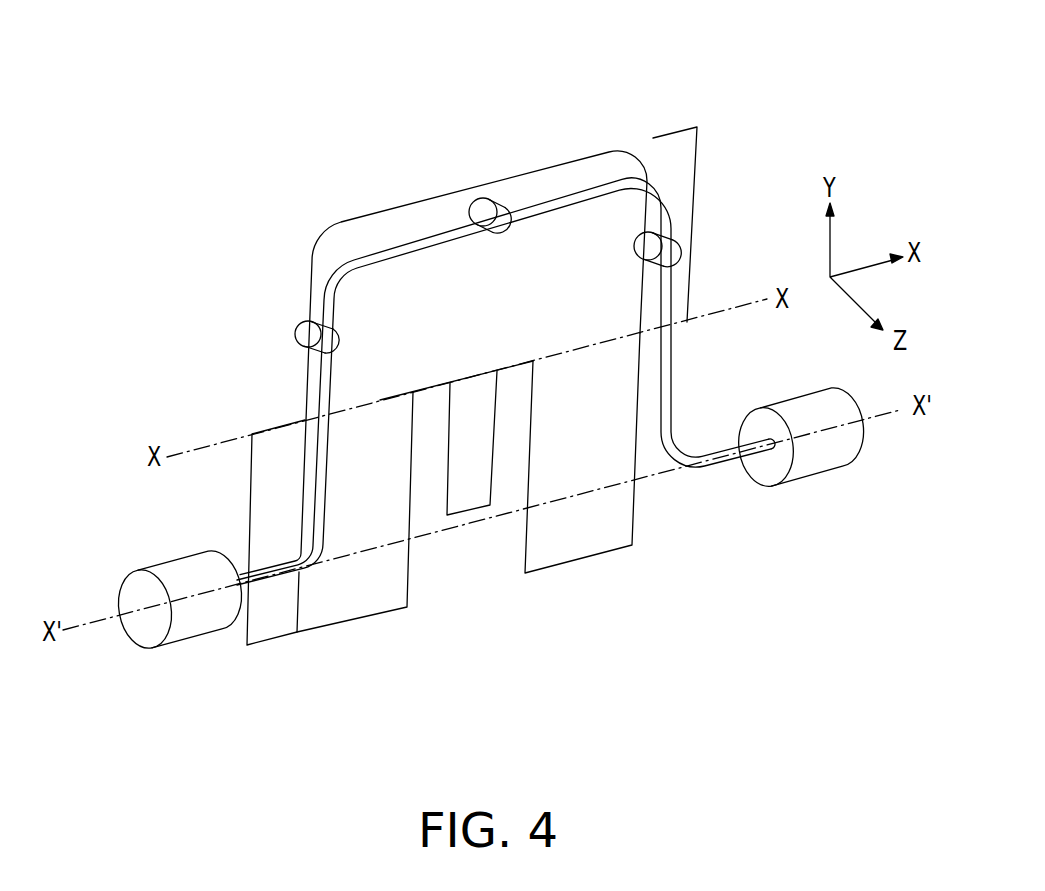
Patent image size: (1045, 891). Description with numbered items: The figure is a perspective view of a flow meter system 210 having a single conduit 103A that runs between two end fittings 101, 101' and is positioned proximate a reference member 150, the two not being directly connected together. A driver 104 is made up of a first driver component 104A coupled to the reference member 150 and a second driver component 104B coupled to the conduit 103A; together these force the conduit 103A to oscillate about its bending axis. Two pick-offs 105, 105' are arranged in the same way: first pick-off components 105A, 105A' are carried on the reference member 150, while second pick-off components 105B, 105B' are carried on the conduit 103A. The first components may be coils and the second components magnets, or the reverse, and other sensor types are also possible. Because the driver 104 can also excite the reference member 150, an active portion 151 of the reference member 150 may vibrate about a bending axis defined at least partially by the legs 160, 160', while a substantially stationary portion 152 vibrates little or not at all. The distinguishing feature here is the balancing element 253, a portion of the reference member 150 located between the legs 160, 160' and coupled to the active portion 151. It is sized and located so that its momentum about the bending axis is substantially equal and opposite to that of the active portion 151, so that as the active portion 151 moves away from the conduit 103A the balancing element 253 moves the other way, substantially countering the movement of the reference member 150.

The flow meter system 210 is at (650, 105).
The first driver component 104A is at (478, 197).
The driver 104 is at (446, 209).
The second driver component 104B is at (496, 234).
The active portion 151 is at (697, 167).
The second pick-off component 105B' is at (712, 229).
The first pick-off component 105A' is at (624, 283).
The pick-off 105' is at (674, 281).
The first pick-off component 105A is at (276, 283).
The pick-off 105 is at (285, 291).
The second pick-off component 105B is at (396, 345).
The conduit 103A is at (322, 415).
The stationary portion 152 is at (250, 493).
The reference member 150 is at (617, 458).
The right tube 101' is at (799, 478).
The leg 160' is at (598, 484).
The balancing element 253 is at (467, 512).
The leg 160 is at (355, 560).
The left tube 101 is at (177, 646).